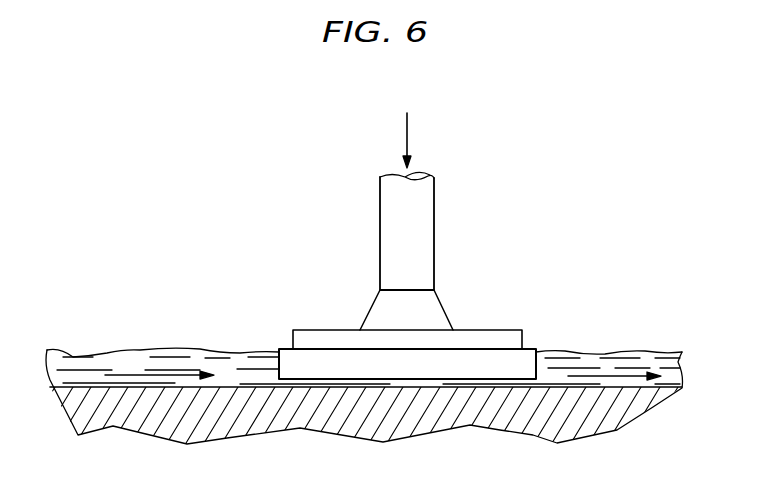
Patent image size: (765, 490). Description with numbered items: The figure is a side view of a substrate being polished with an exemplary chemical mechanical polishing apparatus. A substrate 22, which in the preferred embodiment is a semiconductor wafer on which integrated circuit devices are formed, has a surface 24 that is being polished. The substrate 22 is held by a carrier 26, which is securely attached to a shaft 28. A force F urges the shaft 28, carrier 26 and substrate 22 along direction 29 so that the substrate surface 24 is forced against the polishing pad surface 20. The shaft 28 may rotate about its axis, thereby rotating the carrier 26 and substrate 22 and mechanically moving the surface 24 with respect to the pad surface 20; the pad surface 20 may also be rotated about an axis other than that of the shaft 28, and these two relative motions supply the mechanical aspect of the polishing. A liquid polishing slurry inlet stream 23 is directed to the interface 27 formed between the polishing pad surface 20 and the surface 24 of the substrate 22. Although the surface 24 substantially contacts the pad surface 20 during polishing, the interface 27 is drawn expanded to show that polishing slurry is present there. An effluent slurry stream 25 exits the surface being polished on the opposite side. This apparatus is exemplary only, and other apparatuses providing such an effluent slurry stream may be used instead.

The polishing pad surface 20 is at (257, 389).
The substrate 22 is at (502, 360).
The liquid polishing slurry inlet stream 23 is at (220, 362).
The surface 24 is at (477, 378).
The effluent slurry stream 25 is at (594, 364).
The carrier 26 is at (318, 338).
The interface 27 is at (453, 388).
The shaft 28 is at (420, 208).
The direction 29 is at (403, 133).